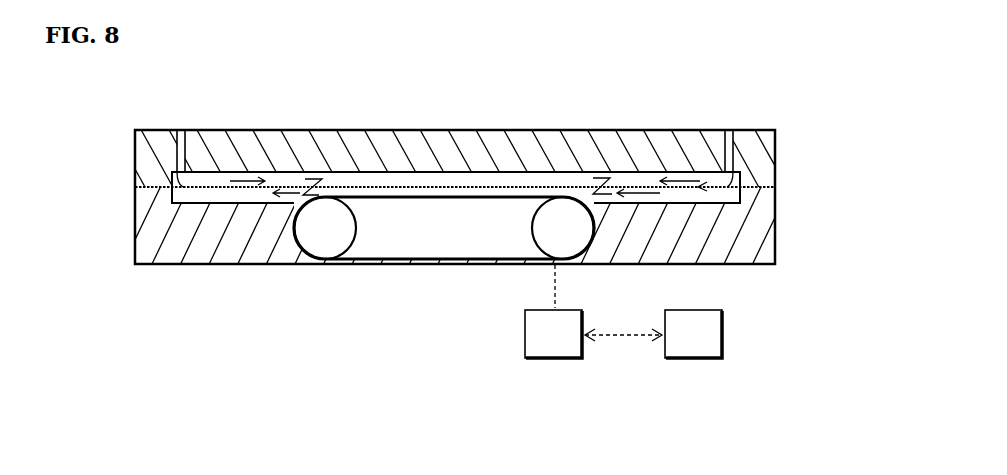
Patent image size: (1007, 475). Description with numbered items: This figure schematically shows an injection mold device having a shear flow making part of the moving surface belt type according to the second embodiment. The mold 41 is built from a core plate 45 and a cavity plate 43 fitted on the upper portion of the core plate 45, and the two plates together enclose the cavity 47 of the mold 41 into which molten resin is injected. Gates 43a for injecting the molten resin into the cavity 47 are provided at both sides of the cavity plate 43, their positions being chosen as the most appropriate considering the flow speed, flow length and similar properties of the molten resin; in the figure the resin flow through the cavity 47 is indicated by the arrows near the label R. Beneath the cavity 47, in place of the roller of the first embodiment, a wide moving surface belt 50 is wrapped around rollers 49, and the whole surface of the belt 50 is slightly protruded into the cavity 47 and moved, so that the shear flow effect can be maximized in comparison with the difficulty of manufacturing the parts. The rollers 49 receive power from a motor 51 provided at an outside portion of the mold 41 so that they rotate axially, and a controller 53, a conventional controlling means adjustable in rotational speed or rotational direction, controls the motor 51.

The mold 41 is at (792, 152).
The cavity plate 43 is at (283, 157).
The gates 43a is at (177, 131).
The passage / recording medium path R is at (438, 180).
The core plate 45 is at (263, 242).
The cavity 47 is at (521, 186).
The roller 49 is at (558, 248).
The moving surface belt 50 is at (418, 262).
The motor 51 is at (553, 360).
The controller 53 is at (693, 360).